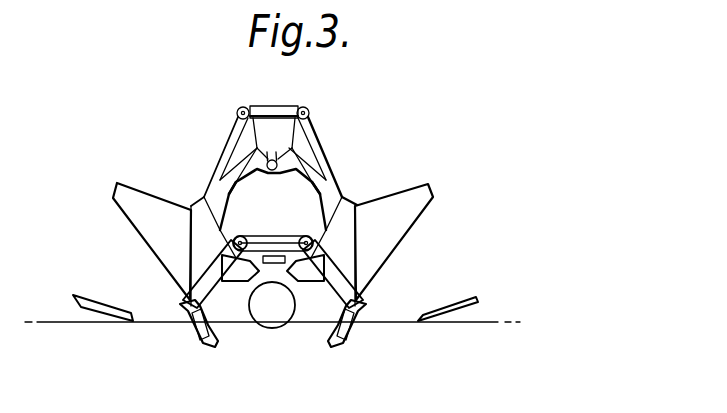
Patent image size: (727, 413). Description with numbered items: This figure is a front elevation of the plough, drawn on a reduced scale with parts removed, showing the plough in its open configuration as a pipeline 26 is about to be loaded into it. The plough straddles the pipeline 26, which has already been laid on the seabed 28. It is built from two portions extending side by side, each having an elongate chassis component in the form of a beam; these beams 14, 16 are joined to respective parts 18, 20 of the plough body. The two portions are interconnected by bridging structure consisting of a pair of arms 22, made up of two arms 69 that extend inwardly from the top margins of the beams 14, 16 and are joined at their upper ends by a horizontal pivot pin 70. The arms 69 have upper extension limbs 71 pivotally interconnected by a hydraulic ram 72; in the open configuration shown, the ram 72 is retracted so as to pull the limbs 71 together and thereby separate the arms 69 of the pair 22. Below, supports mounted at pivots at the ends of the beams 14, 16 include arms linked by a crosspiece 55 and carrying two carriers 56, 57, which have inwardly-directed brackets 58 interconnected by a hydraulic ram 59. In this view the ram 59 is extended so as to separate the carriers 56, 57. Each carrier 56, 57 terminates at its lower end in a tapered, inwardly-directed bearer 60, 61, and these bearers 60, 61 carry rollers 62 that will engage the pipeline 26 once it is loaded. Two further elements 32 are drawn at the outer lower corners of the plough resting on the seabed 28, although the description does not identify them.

The elongate chassis component 14 is at (213, 183).
The elongate chassis component 16 is at (333, 190).
The plough body part 18 is at (104, 213).
The plough body part 20 is at (434, 201).
The pair of arms 22 is at (363, 156).
The pipeline 26 is at (318, 311).
The seabed 28 is at (495, 312).
The skid 32 is at (77, 295).
The crosspiece 55 is at (262, 244).
The carrier 56 is at (213, 268).
The carrier 57 is at (358, 197).
The inwardly-directed bracket 58 is at (240, 270).
The hydraulic ram 59 is at (275, 263).
The bearer 60 is at (203, 343).
The bearer 61 is at (343, 344).
The roller 62 is at (198, 321).
The arm 69 is at (222, 168).
The horizontal pivot pin 70 is at (268, 150).
The upper extension limb 71 is at (238, 120).
The hydraulic ram 72 is at (283, 105).